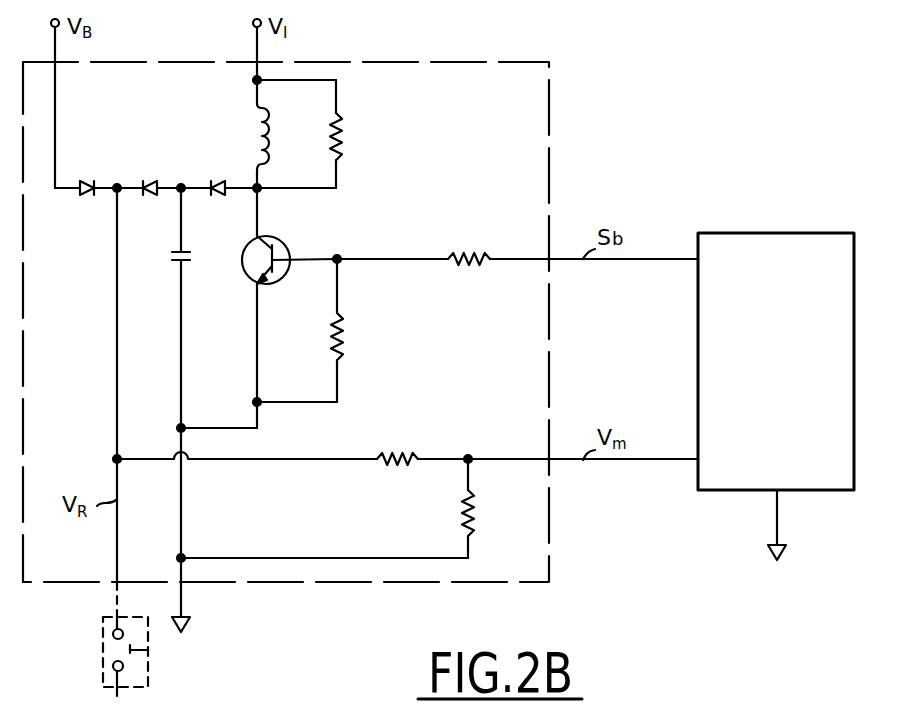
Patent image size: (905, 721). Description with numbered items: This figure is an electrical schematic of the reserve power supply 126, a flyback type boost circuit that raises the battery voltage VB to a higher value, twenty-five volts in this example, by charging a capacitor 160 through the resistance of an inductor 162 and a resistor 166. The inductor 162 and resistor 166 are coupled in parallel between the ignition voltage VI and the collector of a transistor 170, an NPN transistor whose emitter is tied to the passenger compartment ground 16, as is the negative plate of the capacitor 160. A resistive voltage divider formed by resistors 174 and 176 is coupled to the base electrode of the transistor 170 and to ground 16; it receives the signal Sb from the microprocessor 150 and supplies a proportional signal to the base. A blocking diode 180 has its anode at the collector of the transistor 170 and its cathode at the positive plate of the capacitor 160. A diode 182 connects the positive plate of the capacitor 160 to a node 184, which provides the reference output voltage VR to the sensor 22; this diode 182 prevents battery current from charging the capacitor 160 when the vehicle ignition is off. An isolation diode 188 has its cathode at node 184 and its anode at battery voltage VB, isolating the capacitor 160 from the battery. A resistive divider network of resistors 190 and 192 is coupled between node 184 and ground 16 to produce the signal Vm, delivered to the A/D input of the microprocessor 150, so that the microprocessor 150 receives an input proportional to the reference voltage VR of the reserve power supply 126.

The reserve power supply 126 is at (560, 82).
The microprocessor 150 is at (760, 233).
The passenger compartment ground 16 is at (190, 616).
The sensor 22 is at (148, 655).
The capacitor 160 is at (178, 262).
The inductor 162 is at (261, 111).
The resistor 166 is at (340, 128).
The transistor 170 is at (285, 240).
The resistor 174 is at (455, 246).
The resistor 176 is at (345, 334).
The blocking diode 180 is at (216, 180).
The diode 182 is at (150, 178).
The node 184 is at (120, 181).
The isolation diode 188 is at (89, 194).
The resistor 190 is at (398, 452).
The resistor 192 is at (461, 501).